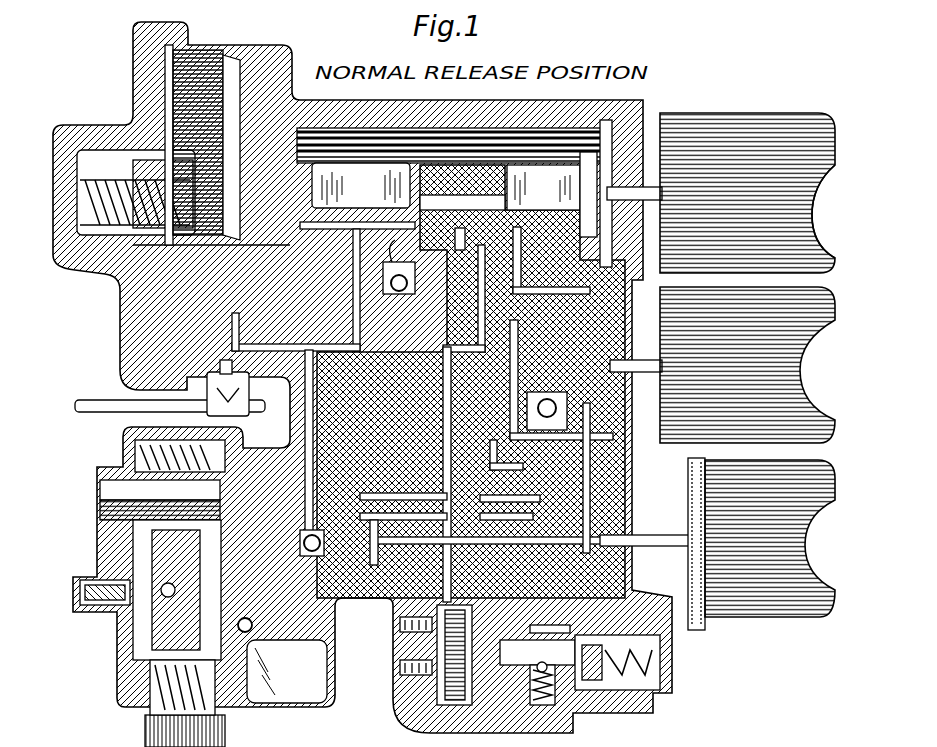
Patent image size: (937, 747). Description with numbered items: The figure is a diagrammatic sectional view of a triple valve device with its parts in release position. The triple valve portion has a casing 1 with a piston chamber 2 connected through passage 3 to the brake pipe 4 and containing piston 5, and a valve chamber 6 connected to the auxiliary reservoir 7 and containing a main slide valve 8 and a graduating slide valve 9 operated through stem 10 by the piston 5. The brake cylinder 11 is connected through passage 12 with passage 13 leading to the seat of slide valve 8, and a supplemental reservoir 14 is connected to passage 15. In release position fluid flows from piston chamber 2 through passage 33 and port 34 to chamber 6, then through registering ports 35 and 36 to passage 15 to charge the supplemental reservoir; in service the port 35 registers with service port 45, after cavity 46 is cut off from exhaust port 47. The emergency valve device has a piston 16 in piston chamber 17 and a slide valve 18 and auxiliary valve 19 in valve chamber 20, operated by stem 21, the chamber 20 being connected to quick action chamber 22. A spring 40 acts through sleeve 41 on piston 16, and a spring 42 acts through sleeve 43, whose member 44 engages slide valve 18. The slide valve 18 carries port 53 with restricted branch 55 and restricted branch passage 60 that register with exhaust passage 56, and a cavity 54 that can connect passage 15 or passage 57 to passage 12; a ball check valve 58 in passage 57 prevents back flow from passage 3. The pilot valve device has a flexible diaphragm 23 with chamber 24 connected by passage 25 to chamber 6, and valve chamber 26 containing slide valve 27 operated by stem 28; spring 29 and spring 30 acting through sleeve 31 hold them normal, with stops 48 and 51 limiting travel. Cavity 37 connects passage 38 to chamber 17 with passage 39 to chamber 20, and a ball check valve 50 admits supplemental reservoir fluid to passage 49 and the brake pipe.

The casing 1 is at (286, 72).
The piston chamber 2 is at (165, 78).
The passage 3 is at (137, 315).
The brake pipe 4 is at (87, 404).
The piston 5 is at (237, 85).
The valve chamber 6 is at (324, 162).
The auxiliary reservoir 7 is at (712, 128).
The main slide valve 8 is at (536, 228).
The graduating slide valve 9 is at (438, 195).
The stem 10 is at (372, 175).
The brake cylinder 11 is at (773, 597).
The passage 12 is at (603, 530).
The passage 13 is at (447, 390).
The supplemental reservoir 14 is at (672, 430).
The passage 15 is at (522, 323).
The piston 16 is at (108, 516).
The piston chamber 17 is at (108, 488).
The slide valve 18 is at (130, 553).
The auxiliary valve 19 is at (130, 575).
The valve chamber 20 is at (160, 623).
The stem 21 is at (172, 636).
The quick action chamber 22 is at (302, 695).
The flexible diaphragm 23 is at (400, 703).
The chamber 24 is at (440, 615).
The passage 25 is at (520, 466).
The valve chamber 26 is at (630, 697).
The slide valve 27 is at (528, 688).
The stem 28 is at (590, 697).
The spring 29 is at (400, 640).
The spring 30 is at (673, 666).
The sleeve 31 is at (660, 703).
The passage 33 is at (300, 332).
The port 34 is at (357, 286).
The port 35 is at (472, 190).
The port 36 is at (512, 238).
The cavity 37 is at (530, 662).
The passage 38 is at (378, 497).
The passage 39 is at (407, 517).
The spring 40 is at (150, 437).
The sleeve 41 is at (150, 465).
The spring 42 is at (150, 703).
The sleeve 43 is at (150, 675).
The member 44 is at (300, 685).
The service port 45 is at (442, 239).
The cavity 46 is at (397, 292).
The exhaust port 47 is at (402, 292).
The stop 48 is at (400, 658).
The passage 49 is at (587, 462).
The ball check valve 50 is at (556, 406).
The stop 51 is at (400, 672).
The port 53 is at (115, 610).
The cavity 54 is at (237, 548).
The restricted branch 55 is at (293, 665).
The exhaust passage 56 is at (253, 625).
The passage 57 is at (313, 420).
The ball check valve 58 is at (318, 533).
The restricted branch passage 60 is at (190, 655).